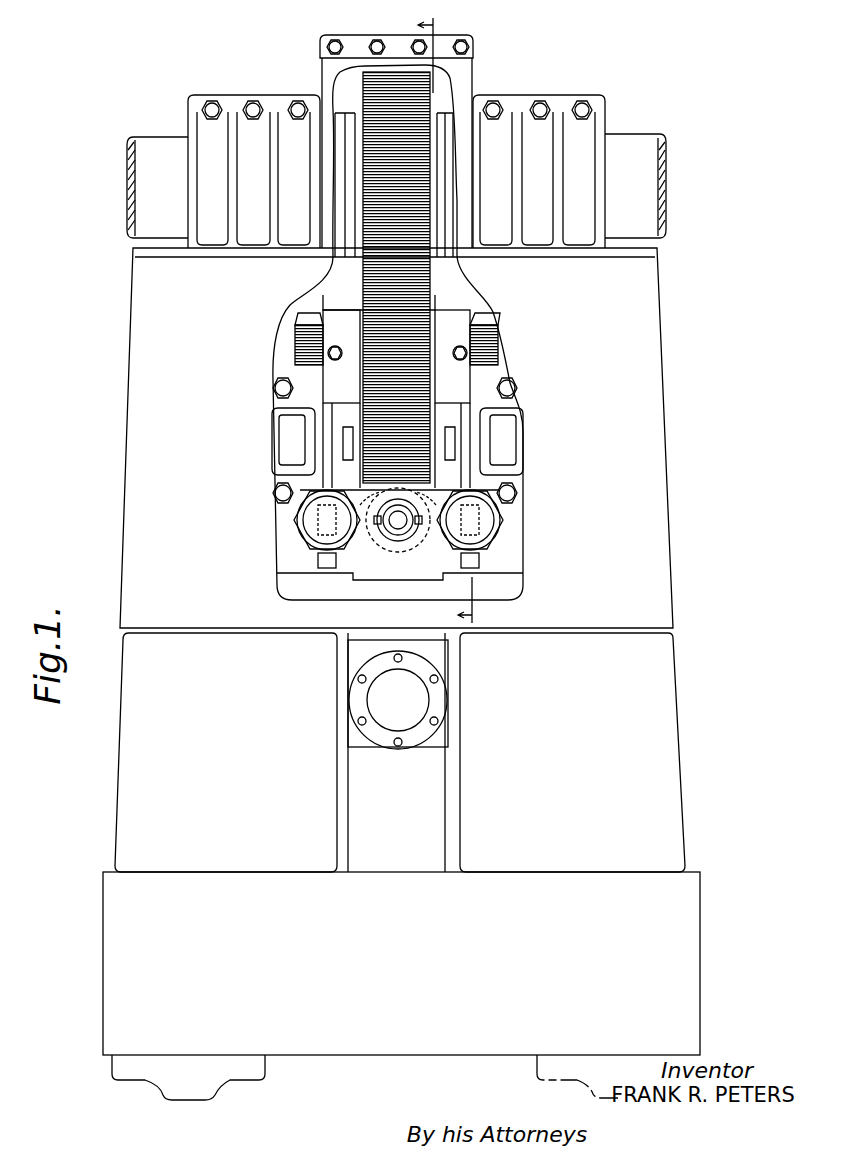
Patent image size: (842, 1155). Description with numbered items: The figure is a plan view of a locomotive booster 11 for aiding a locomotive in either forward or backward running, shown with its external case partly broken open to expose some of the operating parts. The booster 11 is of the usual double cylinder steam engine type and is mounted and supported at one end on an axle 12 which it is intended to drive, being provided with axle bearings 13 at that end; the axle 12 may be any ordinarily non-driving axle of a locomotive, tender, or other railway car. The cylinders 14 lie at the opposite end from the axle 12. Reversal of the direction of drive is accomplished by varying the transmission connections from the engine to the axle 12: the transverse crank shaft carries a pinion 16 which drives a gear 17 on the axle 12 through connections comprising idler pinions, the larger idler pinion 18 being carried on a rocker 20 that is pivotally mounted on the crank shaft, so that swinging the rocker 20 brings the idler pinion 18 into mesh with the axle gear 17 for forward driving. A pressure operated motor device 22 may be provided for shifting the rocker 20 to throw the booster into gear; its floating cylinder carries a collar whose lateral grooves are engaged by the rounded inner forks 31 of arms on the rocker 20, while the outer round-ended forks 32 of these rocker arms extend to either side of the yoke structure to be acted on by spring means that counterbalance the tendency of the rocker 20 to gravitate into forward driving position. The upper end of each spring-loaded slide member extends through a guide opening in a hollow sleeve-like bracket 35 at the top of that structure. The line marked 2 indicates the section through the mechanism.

The section line 2- 2 is at (457, 325).
The booster 11 is at (657, 457).
The axle 12 is at (153, 148).
The axle bearings 13 is at (235, 100).
The cylinders 14 is at (240, 1070).
The pinion 16 is at (395, 540).
The gear 17 is at (413, 167).
The idler pinion 18 is at (378, 325).
The rocker 20 is at (433, 413).
The pressure operated motor device 22 is at (394, 474).
The inner forks 31 is at (360, 560).
The outer forks 32 is at (327, 555).
The bracket 35 is at (297, 521).